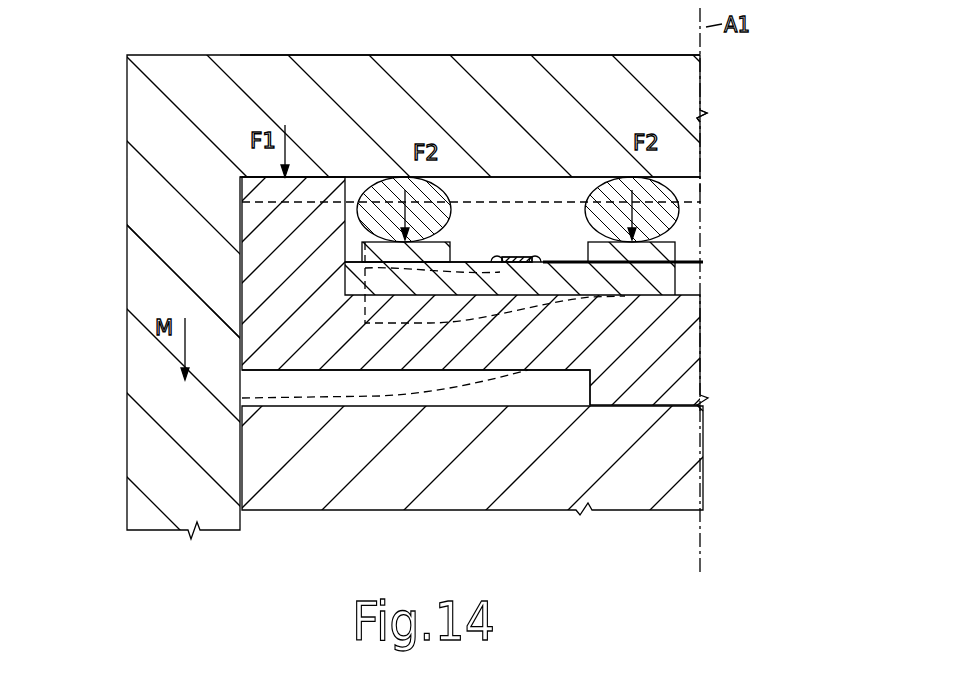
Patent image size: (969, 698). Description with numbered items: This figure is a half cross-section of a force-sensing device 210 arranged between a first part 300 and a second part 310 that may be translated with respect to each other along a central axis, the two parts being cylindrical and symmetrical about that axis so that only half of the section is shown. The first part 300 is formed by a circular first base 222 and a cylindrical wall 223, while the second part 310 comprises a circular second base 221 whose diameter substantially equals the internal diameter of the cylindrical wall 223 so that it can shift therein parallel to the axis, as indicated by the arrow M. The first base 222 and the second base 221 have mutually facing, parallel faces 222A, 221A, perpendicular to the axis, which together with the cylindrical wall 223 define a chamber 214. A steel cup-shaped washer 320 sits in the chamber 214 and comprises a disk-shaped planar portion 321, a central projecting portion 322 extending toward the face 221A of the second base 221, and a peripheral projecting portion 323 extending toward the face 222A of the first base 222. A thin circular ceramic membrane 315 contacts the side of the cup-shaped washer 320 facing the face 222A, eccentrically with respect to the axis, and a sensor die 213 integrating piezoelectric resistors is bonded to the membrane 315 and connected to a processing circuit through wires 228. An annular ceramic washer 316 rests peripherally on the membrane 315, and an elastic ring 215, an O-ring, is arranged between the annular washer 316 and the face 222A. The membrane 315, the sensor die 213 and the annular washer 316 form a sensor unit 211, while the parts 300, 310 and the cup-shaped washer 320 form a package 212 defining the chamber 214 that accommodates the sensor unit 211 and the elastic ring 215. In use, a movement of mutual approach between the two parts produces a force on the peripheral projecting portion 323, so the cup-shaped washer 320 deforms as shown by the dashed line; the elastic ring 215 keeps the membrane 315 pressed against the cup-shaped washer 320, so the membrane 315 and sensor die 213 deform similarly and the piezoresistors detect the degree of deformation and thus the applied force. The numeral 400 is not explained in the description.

The housing 400 is at (124, 126).
The first part 300 is at (492, 48).
The first base 222 is at (535, 70).
The face of the first base 222A is at (533, 172).
The device 210 is at (748, 80).
The sensor unit 211 is at (507, 242).
The package 212 is at (524, 398).
The sensor die 213 is at (513, 257).
The chamber 214 is at (700, 230).
The elastic ring 215 is at (670, 214).
The second base 221 is at (392, 497).
The face of the second base 221A is at (299, 396).
The cylindrical wall 223 is at (138, 261).
The wires 228 is at (500, 256).
The second part 310 is at (343, 521).
The membrane 315 is at (672, 272).
The annular washer 316 is at (366, 252).
The cup-shaped washer 320 is at (486, 285).
The disk-shaped planar portion 321 is at (530, 351).
The central projecting portion 322 is at (675, 396).
The peripheral projecting portion 323 is at (315, 281).